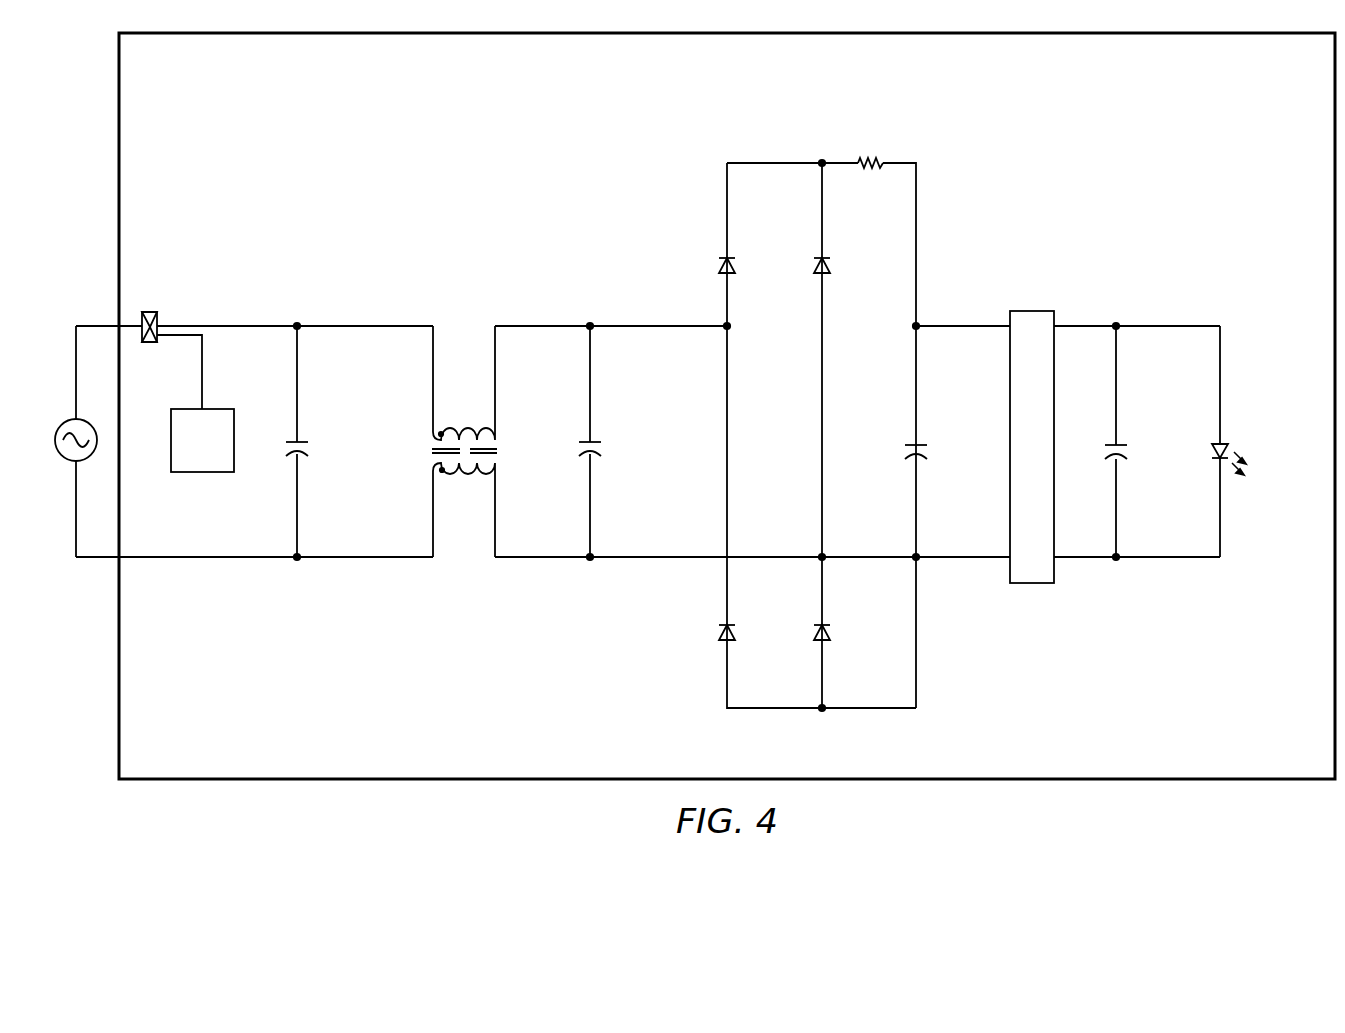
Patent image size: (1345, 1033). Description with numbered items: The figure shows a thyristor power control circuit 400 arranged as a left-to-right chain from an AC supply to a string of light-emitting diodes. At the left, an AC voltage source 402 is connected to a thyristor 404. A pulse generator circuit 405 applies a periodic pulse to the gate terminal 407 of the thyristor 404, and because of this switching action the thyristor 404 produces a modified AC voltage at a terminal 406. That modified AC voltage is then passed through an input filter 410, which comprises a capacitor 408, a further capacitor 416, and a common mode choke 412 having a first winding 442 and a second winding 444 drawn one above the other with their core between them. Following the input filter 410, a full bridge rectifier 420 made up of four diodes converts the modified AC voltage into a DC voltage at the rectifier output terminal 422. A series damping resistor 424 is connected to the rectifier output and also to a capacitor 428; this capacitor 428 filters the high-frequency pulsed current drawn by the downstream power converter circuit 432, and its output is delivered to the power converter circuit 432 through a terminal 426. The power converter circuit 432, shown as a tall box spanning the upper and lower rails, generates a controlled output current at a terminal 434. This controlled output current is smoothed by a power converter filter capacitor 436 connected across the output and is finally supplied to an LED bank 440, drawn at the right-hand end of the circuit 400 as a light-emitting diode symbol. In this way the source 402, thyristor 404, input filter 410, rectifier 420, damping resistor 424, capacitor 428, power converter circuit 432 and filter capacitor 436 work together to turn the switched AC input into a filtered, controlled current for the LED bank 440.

The thyristor power control circuit 400 is at (1012, 667).
The AC voltage source 402 is at (63, 424).
The thyristor 404 is at (154, 311).
The pulse generator circuit 405 is at (222, 455).
The terminal 406 is at (295, 330).
The gate terminal 407 is at (202, 385).
The capacitor 408 is at (292, 442).
The input filter 410 is at (457, 313).
The common mode choke 412 is at (498, 451).
The capacitor 416 is at (594, 443).
The full bridge rectifier 420 is at (770, 711).
The rectifier output terminal 422 is at (818, 168).
The series damping resistor 424 is at (872, 158).
The terminal 426 is at (918, 238).
The capacitor 428 is at (912, 445).
The power converter circuit 432 is at (1030, 310).
The terminal 434 is at (1118, 324).
The power converter filter capacitor 436 is at (1112, 445).
The LED bank 440 is at (1217, 444).
The first winding 442 is at (486, 438).
The second winding 444 is at (455, 474).